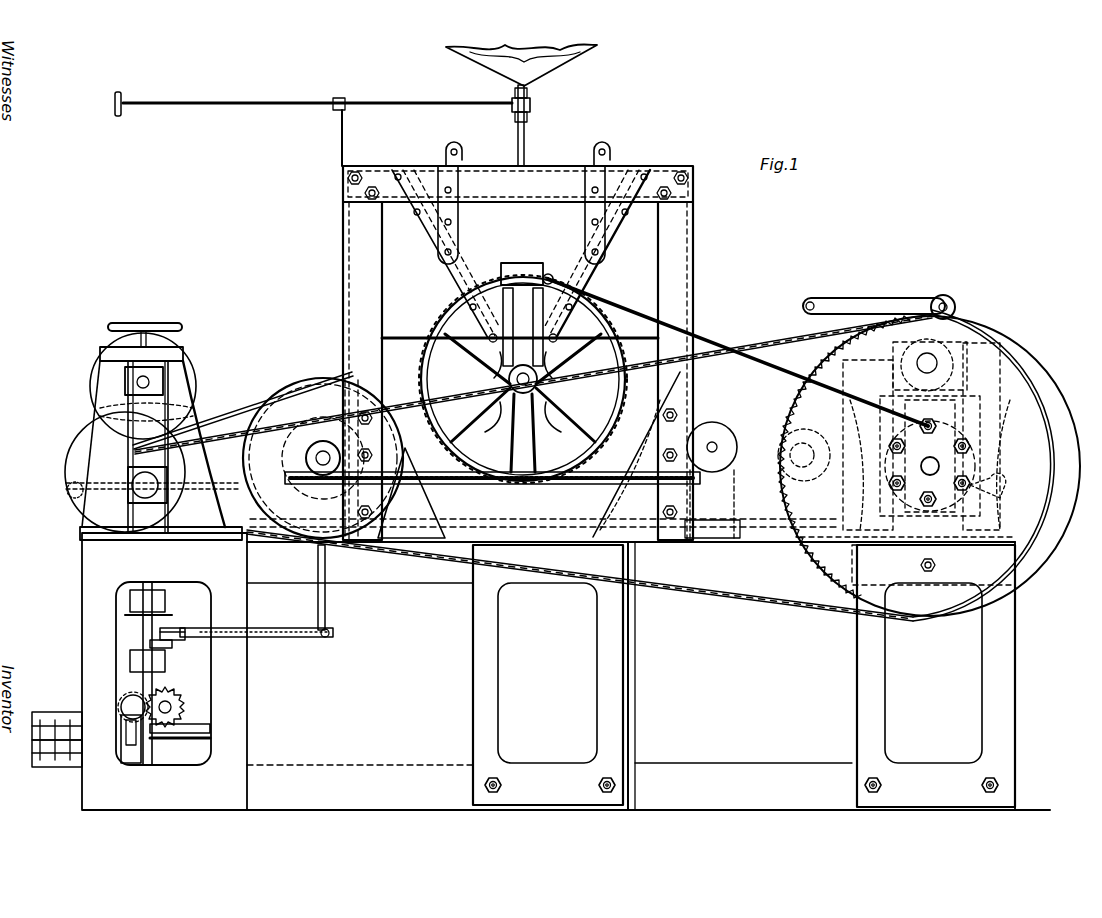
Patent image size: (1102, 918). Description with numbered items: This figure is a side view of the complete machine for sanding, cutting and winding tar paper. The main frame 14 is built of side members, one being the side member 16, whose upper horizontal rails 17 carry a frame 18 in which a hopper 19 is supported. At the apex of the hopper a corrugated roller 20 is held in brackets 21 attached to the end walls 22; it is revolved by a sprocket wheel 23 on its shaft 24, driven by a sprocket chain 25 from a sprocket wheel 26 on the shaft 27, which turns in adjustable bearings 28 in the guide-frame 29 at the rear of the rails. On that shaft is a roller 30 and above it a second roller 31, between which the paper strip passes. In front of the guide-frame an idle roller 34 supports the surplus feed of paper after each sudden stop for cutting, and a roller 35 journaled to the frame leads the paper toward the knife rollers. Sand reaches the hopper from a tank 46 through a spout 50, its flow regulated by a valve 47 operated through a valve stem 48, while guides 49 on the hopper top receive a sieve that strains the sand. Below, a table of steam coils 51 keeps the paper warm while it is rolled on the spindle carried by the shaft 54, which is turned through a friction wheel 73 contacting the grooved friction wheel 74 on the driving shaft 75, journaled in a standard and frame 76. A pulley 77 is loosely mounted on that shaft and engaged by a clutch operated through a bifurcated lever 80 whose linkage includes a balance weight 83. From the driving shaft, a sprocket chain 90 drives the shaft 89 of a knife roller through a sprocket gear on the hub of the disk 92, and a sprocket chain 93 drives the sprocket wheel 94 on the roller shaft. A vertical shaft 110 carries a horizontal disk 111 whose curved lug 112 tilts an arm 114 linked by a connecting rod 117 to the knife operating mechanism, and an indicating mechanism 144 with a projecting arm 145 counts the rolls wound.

The frame 14 is at (668, 658).
The side member 16 is at (633, 600).
The upper horizontal rail 17 is at (839, 676).
The frame 18 is at (693, 280).
The hopper 19 is at (556, 230).
The corrugated roller 20 is at (560, 406).
The bracket 21 is at (518, 265).
The end wall 22 is at (556, 272).
The sprocket wheel 23 is at (622, 400).
The shaft 24 is at (507, 378).
The sprocket chain 25 is at (612, 304).
The sprocket wheel 26 is at (940, 464).
The shaft 27 is at (955, 466).
The adjustable bearing 28 is at (940, 453).
The guide-frame 29 is at (960, 412).
The roller 30 is at (968, 493).
The second roller 31 is at (972, 362).
The idle roller 34 is at (805, 447).
The roller 35 is at (712, 440).
The tank 46 is at (565, 65).
The valve 47 is at (531, 106).
The valve stem 48 is at (218, 106).
The guide 49 is at (604, 150).
The spout 50 is at (524, 146).
The steam coil 51 is at (545, 455).
The shaft 54 is at (150, 380).
The friction wheel 73 is at (198, 388).
The grooved friction wheel 74 is at (62, 482).
The driving shaft 75 is at (140, 493).
The frame 76 is at (182, 472).
The pulley 77 is at (88, 442).
The bifurcated lever 80 is at (153, 672).
The balance weight 83 is at (130, 762).
The shaft 89 is at (316, 459).
The sprocket chain 90 is at (256, 406).
The disk 92 is at (316, 522).
The sprocket chain 93 is at (770, 598).
The sprocket wheel 94 is at (933, 565).
The vertical shaft 110 is at (178, 690).
The horizontal disk 111 is at (170, 645).
The curved lug 112 is at (178, 636).
The arm 114 is at (278, 624).
The connecting rod 117 is at (326, 604).
The indicating mechanism 144 is at (205, 726).
The arm 145 is at (160, 714).